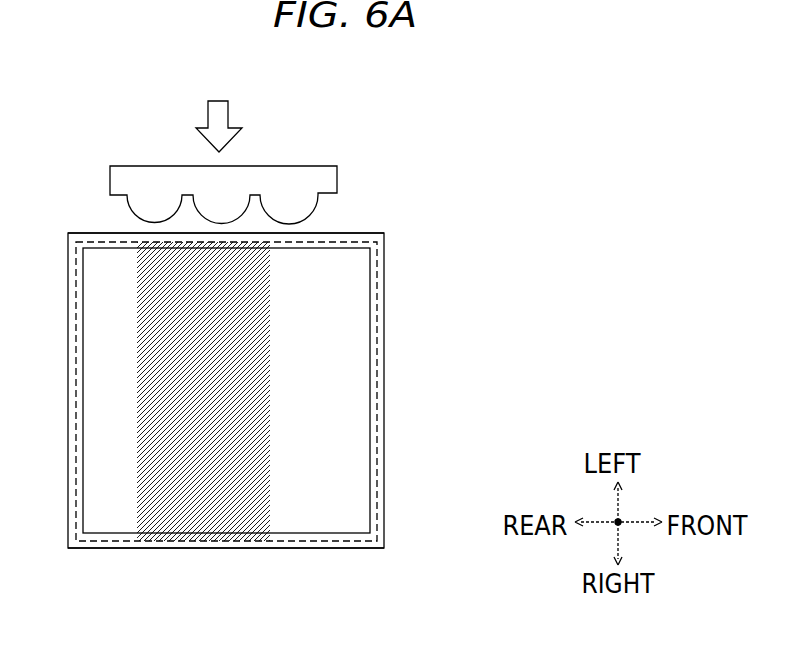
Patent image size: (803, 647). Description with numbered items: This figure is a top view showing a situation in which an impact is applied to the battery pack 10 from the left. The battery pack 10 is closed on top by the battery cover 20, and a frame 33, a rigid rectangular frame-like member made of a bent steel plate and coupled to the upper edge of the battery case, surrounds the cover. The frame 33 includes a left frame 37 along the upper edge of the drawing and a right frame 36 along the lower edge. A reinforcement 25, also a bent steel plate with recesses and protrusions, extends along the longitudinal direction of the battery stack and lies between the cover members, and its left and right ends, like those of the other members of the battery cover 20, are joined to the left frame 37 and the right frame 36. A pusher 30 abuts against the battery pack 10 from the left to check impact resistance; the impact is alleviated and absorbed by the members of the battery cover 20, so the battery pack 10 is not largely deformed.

The battery pack 10 is at (302, 398).
The battery cover 20 is at (112, 541).
The reinforcement 25 is at (197, 541).
The pusher 30 is at (108, 178).
The frame 33 is at (384, 240).
The right frame 36 is at (330, 548).
The left frame 37 is at (352, 233).